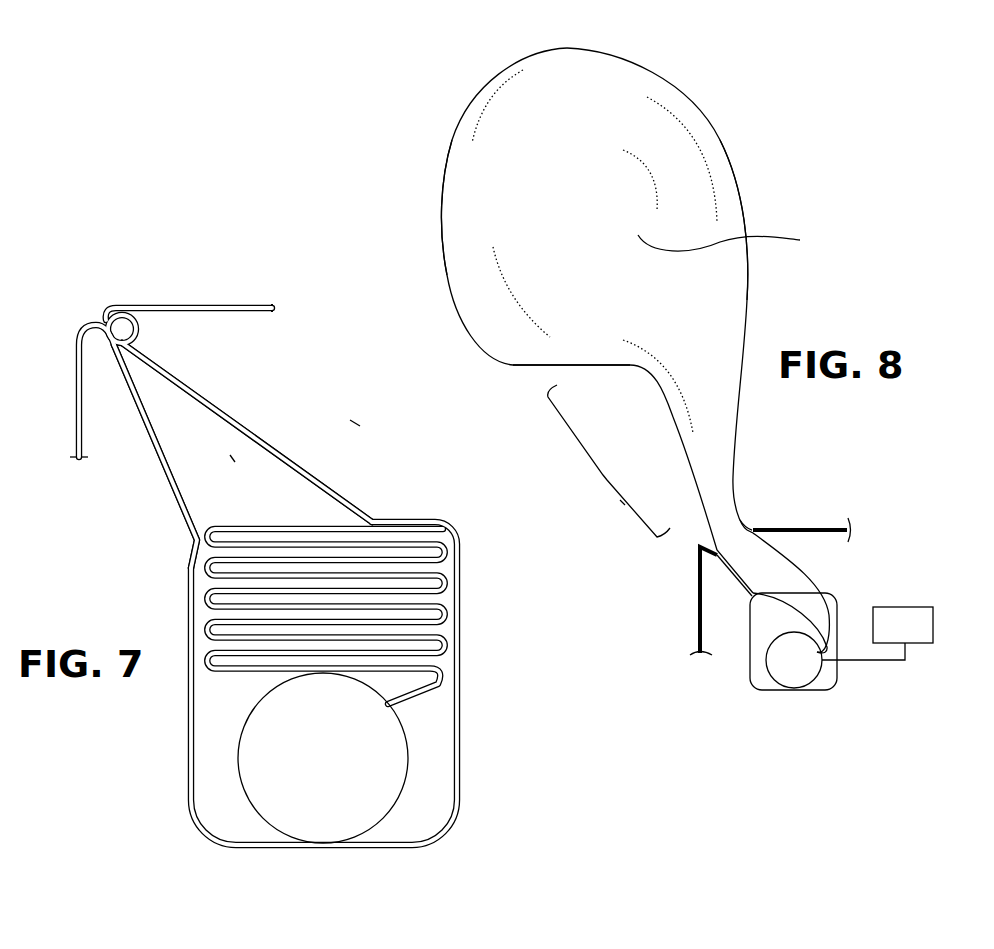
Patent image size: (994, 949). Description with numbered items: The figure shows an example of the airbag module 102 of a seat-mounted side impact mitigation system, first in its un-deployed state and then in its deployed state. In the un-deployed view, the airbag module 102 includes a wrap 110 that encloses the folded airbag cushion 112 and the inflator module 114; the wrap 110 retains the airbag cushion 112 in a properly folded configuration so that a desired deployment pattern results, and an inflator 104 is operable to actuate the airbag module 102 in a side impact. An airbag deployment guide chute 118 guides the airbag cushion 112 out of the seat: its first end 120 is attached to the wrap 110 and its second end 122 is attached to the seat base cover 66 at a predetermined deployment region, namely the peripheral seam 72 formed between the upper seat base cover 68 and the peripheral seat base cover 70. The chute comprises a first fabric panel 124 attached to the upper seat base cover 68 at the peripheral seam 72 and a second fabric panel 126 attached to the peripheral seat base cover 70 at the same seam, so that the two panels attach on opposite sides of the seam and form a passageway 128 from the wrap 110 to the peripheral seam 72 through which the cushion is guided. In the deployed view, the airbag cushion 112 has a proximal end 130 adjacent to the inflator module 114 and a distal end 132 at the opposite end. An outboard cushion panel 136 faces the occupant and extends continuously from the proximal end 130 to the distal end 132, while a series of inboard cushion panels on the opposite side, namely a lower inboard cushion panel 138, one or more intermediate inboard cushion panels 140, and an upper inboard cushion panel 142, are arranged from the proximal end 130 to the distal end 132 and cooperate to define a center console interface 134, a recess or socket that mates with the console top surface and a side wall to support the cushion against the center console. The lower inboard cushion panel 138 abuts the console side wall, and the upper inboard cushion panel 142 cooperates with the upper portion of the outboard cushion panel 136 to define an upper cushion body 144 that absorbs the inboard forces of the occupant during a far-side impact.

In FIG. 7, the seat base cover 66 is at (217, 298).
In FIG. 7, the upper seat base cover 68 is at (172, 303).
In FIG. 8, the upper seat base cover 68 is at (817, 525).
In FIG. 7, the peripheral seat base cover 70 is at (77, 387).
In FIG. 8, the peripheral seat base cover 70 is at (698, 594).
In FIG. 7, the peripheral seam 72 is at (100, 318).
In FIG. 7, the airbag module 102 is at (359, 408).
In FIG. 8, the airbag module 102 is at (608, 524).
In FIG. 8, the inflator 104 is at (890, 634).
In FIG. 7, the wrap 110 is at (184, 808).
In FIG. 8, the wrap 110 is at (745, 670).
In FIG. 7, the airbag cushion 112 is at (395, 570).
In FIG. 8, the airbag cushion 112 is at (681, 70).
In FIG. 7, the inflator module 114 is at (343, 812).
In FIG. 8, the inflator module 114 is at (794, 660).
In FIG. 7, the airbag deployment guide chute 118 is at (170, 505).
In FIG. 8, the airbag deployment guide chute 118 is at (795, 574).
In FIG. 7, the first end 120 is at (366, 517).
In FIG. 7, the second end 122 is at (130, 316).
In FIG. 7, the first fabric panel 124 is at (170, 374).
In FIG. 7, the second fabric panel 126 is at (136, 398).
In FIG. 7, the passageway 128 is at (222, 462).
In FIG. 8, the proximal end 130 is at (748, 528).
In FIG. 8, the distal end 132 is at (568, 47).
In FIG. 8, the center console interface 134 is at (609, 461).
In FIG. 8, the outboard cushion panel 136 is at (743, 192).
In FIG. 8, the lower inboard cushion panel 138 is at (673, 417).
In FIG. 8, the intermediate inboard cushion panel 140 is at (573, 367).
In FIG. 8, the upper inboard cushion panel 142 is at (442, 216).
In FIG. 8, the upper cushion body 144 is at (737, 240).